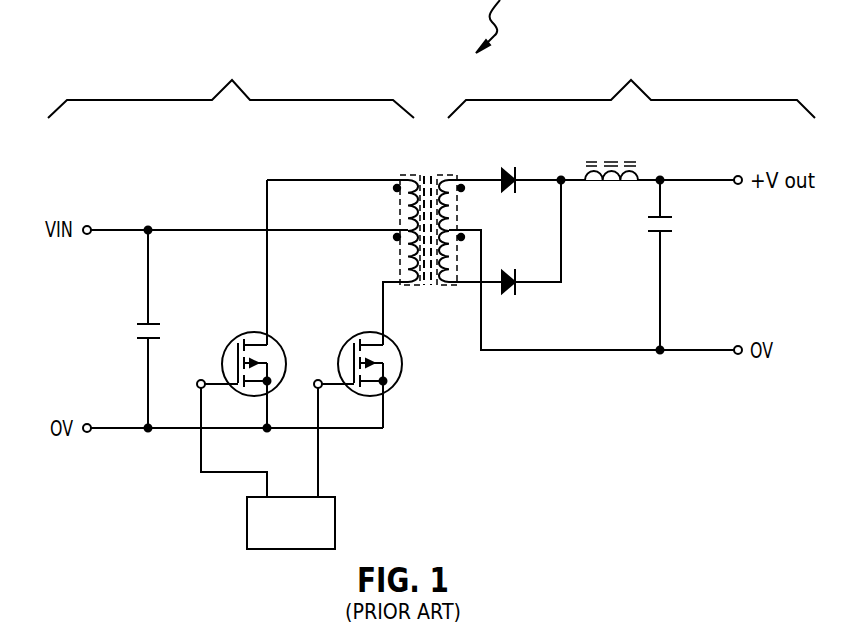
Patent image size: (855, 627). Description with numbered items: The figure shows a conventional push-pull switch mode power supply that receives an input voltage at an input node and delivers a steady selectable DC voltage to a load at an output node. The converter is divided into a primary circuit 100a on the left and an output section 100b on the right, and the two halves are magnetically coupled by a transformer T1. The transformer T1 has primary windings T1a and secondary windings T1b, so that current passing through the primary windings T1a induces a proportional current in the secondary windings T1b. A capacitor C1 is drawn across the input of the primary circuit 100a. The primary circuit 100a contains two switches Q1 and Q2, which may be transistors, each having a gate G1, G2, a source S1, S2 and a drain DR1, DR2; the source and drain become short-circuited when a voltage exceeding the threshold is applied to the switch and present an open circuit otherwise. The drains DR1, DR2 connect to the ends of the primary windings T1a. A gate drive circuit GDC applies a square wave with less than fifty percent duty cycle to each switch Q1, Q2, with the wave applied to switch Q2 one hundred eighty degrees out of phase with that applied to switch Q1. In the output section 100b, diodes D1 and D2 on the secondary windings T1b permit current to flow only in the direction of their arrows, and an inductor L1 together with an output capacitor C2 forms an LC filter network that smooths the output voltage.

The primary circuit 100a is at (231, 84).
The output section 100b is at (631, 84).
The transformer T1 is at (429, 214).
The primary windings T1a is at (411, 288).
The secondary windings T1b is at (446, 288).
The diode D1 is at (511, 163).
The diode D2 is at (507, 268).
The inductor L1 is at (611, 189).
The capacitor C1 is at (156, 329).
The output capacitor C2 is at (666, 265).
The switch Q1 is at (244, 357).
The switch Q2 is at (358, 357).
The gate G1 is at (218, 437).
The gate G2 is at (328, 426).
The source S1 is at (267, 410).
The source S2 is at (383, 410).
The drain DR1 is at (267, 280).
The drain DR2 is at (383, 300).
The gate drive circuit GDC is at (291, 523).